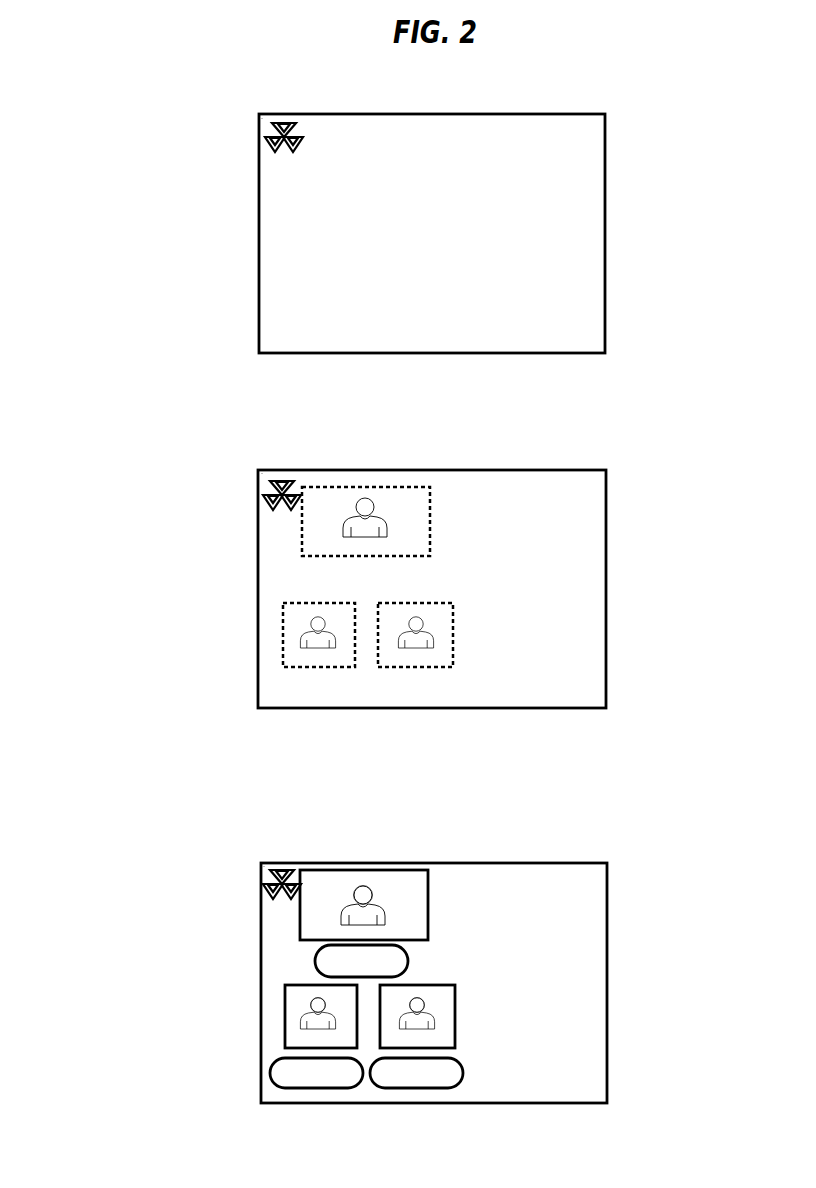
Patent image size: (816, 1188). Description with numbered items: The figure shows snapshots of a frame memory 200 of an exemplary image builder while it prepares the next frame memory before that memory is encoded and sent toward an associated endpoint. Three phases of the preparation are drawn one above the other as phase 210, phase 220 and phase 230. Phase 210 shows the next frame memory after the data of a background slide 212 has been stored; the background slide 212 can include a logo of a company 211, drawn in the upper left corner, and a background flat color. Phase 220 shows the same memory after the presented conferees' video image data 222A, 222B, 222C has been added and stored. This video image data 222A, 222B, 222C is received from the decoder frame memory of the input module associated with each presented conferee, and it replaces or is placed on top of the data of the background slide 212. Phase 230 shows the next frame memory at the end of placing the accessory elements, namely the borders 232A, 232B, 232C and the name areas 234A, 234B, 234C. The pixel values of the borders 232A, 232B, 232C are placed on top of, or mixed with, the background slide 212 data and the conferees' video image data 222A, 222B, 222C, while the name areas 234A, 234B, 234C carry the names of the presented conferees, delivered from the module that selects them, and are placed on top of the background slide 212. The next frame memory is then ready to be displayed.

The frame memory 200 is at (107, 205).
The first phase 210 is at (605, 233).
The logo of a company 211 is at (280, 120).
The background slide 212 is at (277, 195).
The second phase 220 is at (606, 588).
The presented conferee's video image data 222A is at (357, 487).
The presented conferee's video image data 222B is at (283, 617).
The presented conferee's video image data 222C is at (410, 655).
The third phase 230 is at (607, 983).
The border 232A is at (370, 870).
The border 232B is at (285, 985).
The border 232C is at (378, 1047).
The name area 234A is at (317, 963).
The name area 234B is at (271, 1071).
The name area 234C is at (417, 1088).